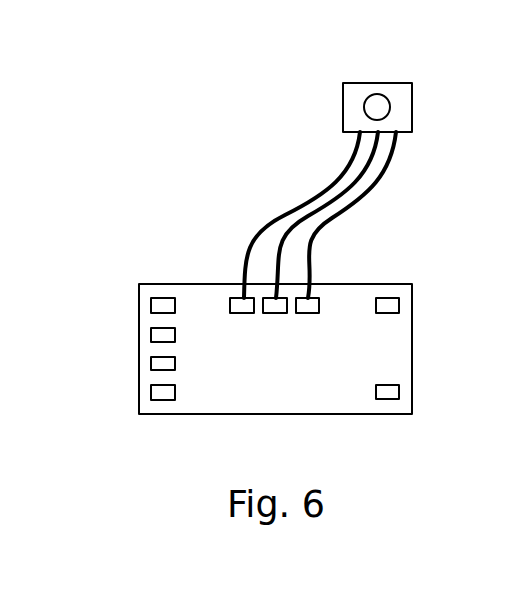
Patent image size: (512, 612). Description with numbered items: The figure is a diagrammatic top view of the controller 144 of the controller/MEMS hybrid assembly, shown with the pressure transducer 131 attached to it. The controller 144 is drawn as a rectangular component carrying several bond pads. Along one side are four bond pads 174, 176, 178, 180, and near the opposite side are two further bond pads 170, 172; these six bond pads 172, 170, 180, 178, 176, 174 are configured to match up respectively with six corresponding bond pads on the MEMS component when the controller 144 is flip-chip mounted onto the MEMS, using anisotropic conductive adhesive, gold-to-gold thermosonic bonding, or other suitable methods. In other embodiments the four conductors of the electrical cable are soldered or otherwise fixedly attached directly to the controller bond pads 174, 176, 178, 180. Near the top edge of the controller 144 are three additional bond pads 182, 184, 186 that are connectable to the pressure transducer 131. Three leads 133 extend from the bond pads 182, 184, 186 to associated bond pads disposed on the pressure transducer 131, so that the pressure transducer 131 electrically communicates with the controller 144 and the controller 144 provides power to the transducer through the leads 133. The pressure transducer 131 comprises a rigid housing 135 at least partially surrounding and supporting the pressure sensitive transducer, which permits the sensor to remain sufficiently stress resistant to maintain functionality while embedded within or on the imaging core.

The pressure transducer 131 is at (377, 94).
The leads 133 is at (396, 157).
The rigid housing 135 is at (414, 107).
The controller 144 is at (228, 248).
The bond pad 170 is at (383, 298).
The bond pad 172 is at (390, 399).
The bond pad 174 is at (163, 297).
The bond pad 176 is at (151, 335).
The bond pad 178 is at (151, 362).
The bond pad 180 is at (163, 400).
The bond pad 182 is at (238, 313).
The bond pad 184 is at (282, 313).
The bond pad 186 is at (313, 313).